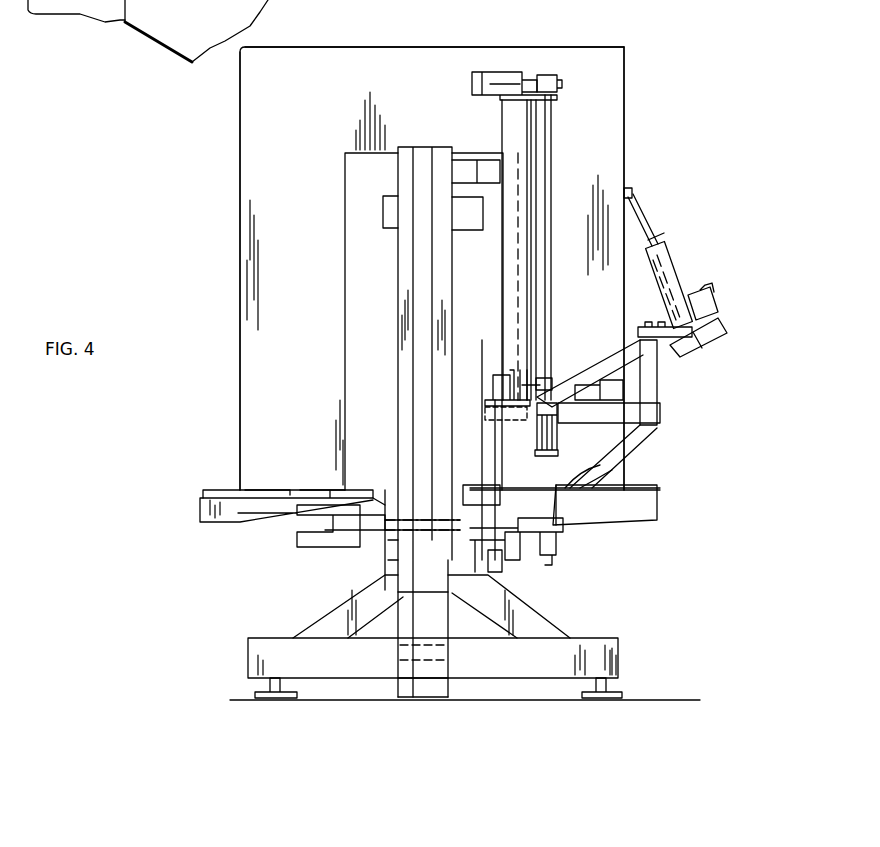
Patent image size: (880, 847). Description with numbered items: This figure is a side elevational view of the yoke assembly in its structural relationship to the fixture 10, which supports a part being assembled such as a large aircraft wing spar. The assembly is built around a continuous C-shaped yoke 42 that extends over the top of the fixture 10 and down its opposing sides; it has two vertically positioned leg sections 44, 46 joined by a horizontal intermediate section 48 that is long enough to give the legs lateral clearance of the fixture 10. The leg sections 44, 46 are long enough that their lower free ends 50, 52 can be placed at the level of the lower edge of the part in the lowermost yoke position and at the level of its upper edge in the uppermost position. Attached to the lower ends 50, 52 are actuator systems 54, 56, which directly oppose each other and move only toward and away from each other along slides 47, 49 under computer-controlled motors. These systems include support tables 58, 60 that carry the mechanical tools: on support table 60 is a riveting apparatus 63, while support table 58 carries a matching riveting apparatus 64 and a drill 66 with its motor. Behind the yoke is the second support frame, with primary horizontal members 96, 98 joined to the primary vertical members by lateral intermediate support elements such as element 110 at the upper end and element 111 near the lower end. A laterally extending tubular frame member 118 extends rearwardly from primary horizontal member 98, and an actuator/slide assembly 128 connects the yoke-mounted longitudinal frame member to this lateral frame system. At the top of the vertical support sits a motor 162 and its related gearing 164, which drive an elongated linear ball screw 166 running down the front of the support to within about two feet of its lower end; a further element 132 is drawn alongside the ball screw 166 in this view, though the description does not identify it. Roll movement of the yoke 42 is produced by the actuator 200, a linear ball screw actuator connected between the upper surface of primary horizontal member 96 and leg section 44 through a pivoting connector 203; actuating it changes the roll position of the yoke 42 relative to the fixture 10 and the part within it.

The fixture 10 is at (368, 296).
The C-shaped yoke 42 is at (232, 138).
The leg section 44 is at (612, 146).
The leg section 46 is at (240, 178).
The slide 47 is at (620, 488).
The intermediate section 48 is at (431, 57).
The slide 49 is at (262, 489).
The lower free end 50 is at (318, 489).
The lower free end 52 is at (600, 486).
The actuator system 54 is at (606, 530).
The actuator system 56 is at (236, 538).
The support table 58 is at (658, 507).
The support table 60 is at (204, 520).
The riveting apparatus 63 is at (376, 526).
The riveting apparatus 64 is at (497, 500).
The drill 66 is at (558, 533).
The primary horizontal member 96 is at (656, 370).
The primary horizontal member 98 is at (661, 412).
The lateral intermediate support element 110 is at (603, 362).
The lateral intermediate support element 111 is at (645, 438).
The laterally extending tubular frame member 118 is at (582, 425).
The actuator/slide assembly 128 is at (572, 378).
The rod 132 is at (534, 126).
The motor 162 is at (505, 74).
The gearing 164 is at (553, 78).
The linear ball screw 166 is at (550, 168).
The actuator 200 is at (674, 254).
The pivoting connector 203 is at (635, 195).